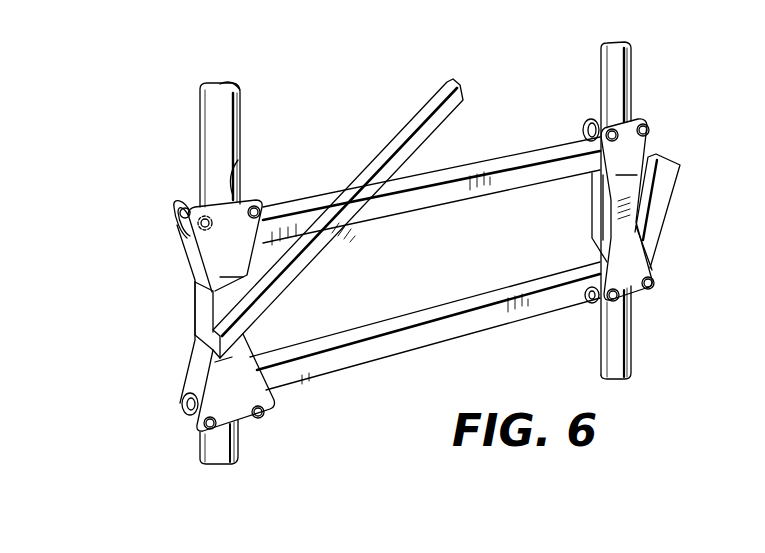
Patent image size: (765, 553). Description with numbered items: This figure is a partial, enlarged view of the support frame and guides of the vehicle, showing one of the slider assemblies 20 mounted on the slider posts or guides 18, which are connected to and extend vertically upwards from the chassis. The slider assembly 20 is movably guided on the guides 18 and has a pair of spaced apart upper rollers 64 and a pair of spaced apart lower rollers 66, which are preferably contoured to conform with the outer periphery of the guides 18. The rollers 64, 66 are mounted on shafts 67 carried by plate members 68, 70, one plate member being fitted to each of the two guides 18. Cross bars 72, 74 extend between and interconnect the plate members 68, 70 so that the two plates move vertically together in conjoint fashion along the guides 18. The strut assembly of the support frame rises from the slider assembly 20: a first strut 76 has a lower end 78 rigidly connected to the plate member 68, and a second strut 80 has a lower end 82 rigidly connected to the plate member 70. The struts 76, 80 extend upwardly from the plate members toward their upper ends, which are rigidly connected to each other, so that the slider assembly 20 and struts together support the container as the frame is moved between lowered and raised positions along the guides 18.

The slider posts or guides 18 is at (233, 106).
The slider assembly 20 is at (147, 328).
The upper rollers 64 is at (178, 186).
The lower rollers 66 is at (185, 416).
The shafts 67 is at (258, 205).
The plate member 68 is at (231, 315).
The plate member 70 is at (626, 209).
The cross bar 72 is at (476, 166).
The cross bar 74 is at (480, 297).
The first strut 76 is at (428, 105).
The lower end of first strut 78 is at (244, 327).
The second strut 80 is at (667, 193).
The lower end of second strut 82 is at (653, 258).